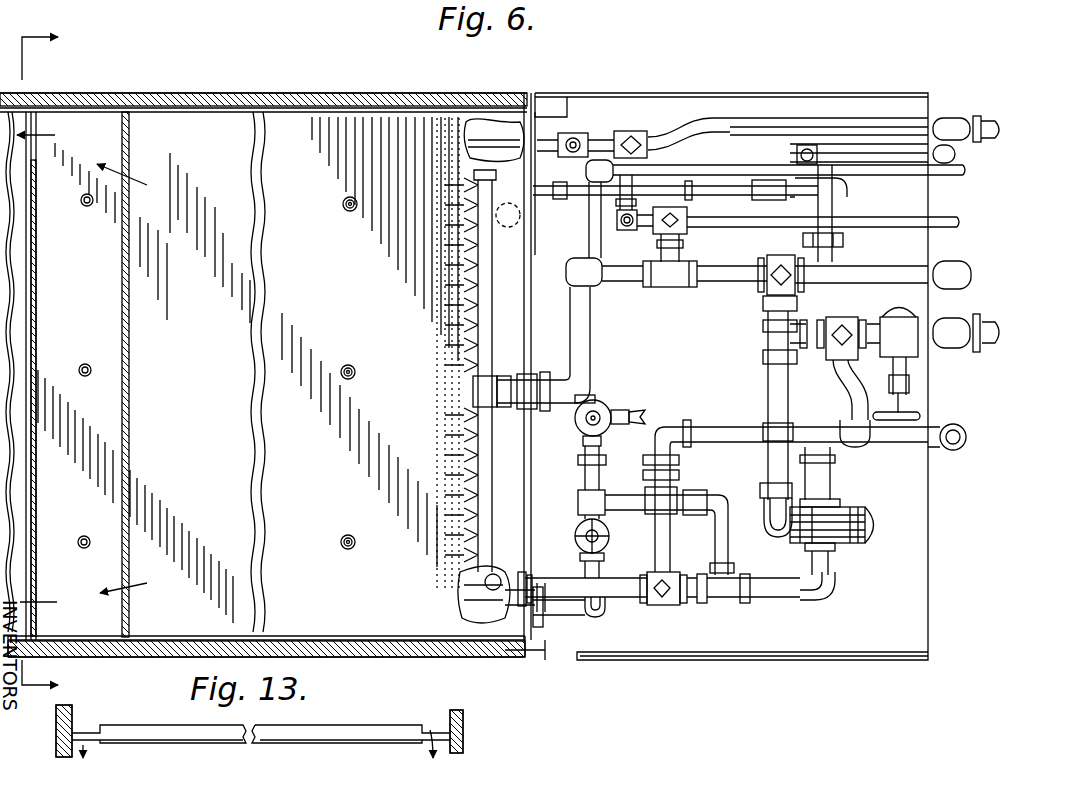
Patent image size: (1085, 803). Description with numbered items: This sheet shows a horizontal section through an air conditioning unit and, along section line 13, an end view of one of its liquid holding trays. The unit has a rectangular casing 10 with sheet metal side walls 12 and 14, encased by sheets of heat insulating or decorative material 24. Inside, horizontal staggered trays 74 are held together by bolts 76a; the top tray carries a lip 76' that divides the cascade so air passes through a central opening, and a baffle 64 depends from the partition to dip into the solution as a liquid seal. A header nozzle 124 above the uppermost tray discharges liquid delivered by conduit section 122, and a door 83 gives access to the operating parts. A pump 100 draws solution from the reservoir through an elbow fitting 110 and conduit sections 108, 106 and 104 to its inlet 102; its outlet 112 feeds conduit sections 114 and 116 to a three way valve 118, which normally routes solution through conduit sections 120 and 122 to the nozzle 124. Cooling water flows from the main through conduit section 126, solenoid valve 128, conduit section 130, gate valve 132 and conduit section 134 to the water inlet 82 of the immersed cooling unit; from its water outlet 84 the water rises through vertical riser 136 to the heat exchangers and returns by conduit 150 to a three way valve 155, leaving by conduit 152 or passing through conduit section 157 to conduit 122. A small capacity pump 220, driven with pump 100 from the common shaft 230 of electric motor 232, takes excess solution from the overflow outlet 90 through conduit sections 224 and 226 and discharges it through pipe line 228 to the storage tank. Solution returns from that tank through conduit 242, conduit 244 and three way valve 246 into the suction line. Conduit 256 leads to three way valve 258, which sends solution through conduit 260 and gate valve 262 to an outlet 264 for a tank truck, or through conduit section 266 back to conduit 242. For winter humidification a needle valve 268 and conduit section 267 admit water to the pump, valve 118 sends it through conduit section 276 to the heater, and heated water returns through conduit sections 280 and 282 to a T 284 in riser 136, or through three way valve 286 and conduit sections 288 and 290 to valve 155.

In FIG. 6, the casing 10 is at (536, 297).
In FIG. 6, the side wall 12 is at (358, 636).
In FIG. 13, the side wall 12 is at (463, 726).
In FIG. 6, the section line 13 is at (57, 363).
In FIG. 6, the side wall 14 is at (347, 106).
In FIG. 13, the side wall 14 is at (57, 734).
In FIG. 6, the heat insulating or decorative material 24 is at (222, 84).
In FIG. 13, the heat insulating or decorative material 24 is at (72, 722).
In FIG. 6, the baffle 64 is at (130, 383).
In FIG. 6, the tray 74 is at (54, 376).
In FIG. 13, the tray 74 is at (245, 752).
In FIG. 6, the lip 76' is at (135, 372).
In FIG. 13, the lip 76' is at (351, 728).
In FIG. 6, the bolts 76a is at (343, 204).
In FIG. 6, the water inlet 82 is at (528, 660).
In FIG. 6, the door 83 is at (852, 662).
In FIG. 6, the water outlet 84 is at (496, 135).
In FIG. 6, the overflow outlet 90 is at (478, 205).
In FIG. 6, the pump 100 is at (868, 528).
In FIG. 6, the pump inlet 102 is at (836, 590).
In FIG. 6, the conduit section 104 is at (780, 600).
In FIG. 6, the conduit section 106 is at (690, 605).
In FIG. 6, the conduit section 108 is at (617, 598).
In FIG. 6, the elbow fitting 110 is at (470, 578).
In FIG. 6, the pump outlet 112 is at (780, 537).
In FIG. 6, the conduit section 114 is at (768, 410).
In FIG. 6, the conduit section 116 is at (766, 306).
In FIG. 6, the three way valve 118 is at (782, 260).
In FIG. 6, the conduit section 120 is at (728, 282).
In FIG. 6, the conduit section 122 is at (628, 282).
In FIG. 6, the header nozzle 124 is at (472, 440).
In FIG. 6, the conduit section 126 is at (730, 167).
In FIG. 6, the solenoid valve 128 is at (600, 404).
In FIG. 6, the conduit section 130 is at (585, 475).
In FIG. 6, the gate valve 132 is at (580, 501).
In FIG. 6, the conduit section 134 is at (590, 575).
In FIG. 6, the vertical riser 136 is at (577, 133).
In FIG. 6, the conduit 150 is at (620, 223).
In FIG. 6, the conduit 152 is at (750, 228).
In FIG. 6, the three way valve 155 is at (690, 222).
In FIG. 6, the conduit section 157 is at (680, 272).
In FIG. 6, the small capacity pump 220 is at (842, 198).
In FIG. 6, the conduit section 224 is at (876, 152).
In FIG. 6, the conduit section 226 is at (668, 186).
In FIG. 6, the pipe line 228 is at (880, 150).
In FIG. 6, the common shaft 230 is at (845, 243).
In FIG. 6, the electric motor 232 is at (835, 325).
In FIG. 6, the conduit 242 is at (957, 450).
In FIG. 6, the conduit 244 is at (735, 443).
In FIG. 6, the three way valve 246 is at (665, 607).
In FIG. 6, the conduit 256 is at (763, 370).
In FIG. 6, the three way valve 258 is at (762, 336).
In FIG. 6, the conduit 260 is at (876, 326).
In FIG. 6, the gate valve 262 is at (905, 333).
In FIG. 6, the outlet 264 is at (982, 348).
In FIG. 6, the conduit section 266 is at (868, 406).
In FIG. 6, the conduit section 267 is at (714, 546).
In FIG. 6, the needle valve 268 is at (617, 493).
In FIG. 6, the conduit section 276 is at (906, 276).
In FIG. 6, the conduit section 280 is at (806, 127).
In FIG. 6, the conduit section 282 is at (600, 137).
In FIG. 6, the T 284 is at (586, 170).
In FIG. 6, the three way valve 286 is at (668, 130).
In FIG. 6, the conduit section 288 is at (620, 196).
In FIG. 6, the conduit section 290 is at (644, 229).